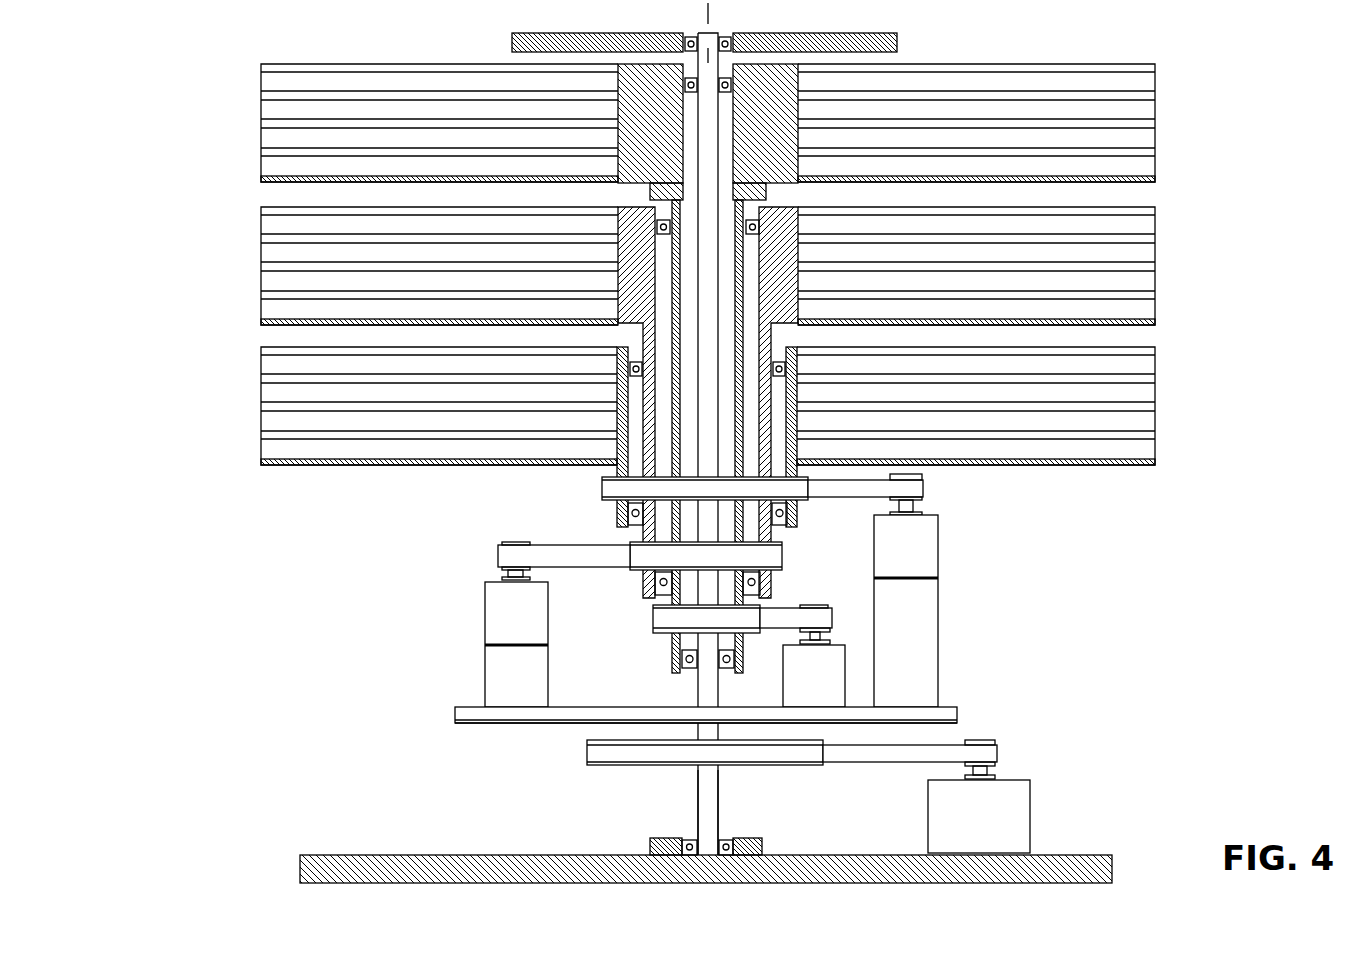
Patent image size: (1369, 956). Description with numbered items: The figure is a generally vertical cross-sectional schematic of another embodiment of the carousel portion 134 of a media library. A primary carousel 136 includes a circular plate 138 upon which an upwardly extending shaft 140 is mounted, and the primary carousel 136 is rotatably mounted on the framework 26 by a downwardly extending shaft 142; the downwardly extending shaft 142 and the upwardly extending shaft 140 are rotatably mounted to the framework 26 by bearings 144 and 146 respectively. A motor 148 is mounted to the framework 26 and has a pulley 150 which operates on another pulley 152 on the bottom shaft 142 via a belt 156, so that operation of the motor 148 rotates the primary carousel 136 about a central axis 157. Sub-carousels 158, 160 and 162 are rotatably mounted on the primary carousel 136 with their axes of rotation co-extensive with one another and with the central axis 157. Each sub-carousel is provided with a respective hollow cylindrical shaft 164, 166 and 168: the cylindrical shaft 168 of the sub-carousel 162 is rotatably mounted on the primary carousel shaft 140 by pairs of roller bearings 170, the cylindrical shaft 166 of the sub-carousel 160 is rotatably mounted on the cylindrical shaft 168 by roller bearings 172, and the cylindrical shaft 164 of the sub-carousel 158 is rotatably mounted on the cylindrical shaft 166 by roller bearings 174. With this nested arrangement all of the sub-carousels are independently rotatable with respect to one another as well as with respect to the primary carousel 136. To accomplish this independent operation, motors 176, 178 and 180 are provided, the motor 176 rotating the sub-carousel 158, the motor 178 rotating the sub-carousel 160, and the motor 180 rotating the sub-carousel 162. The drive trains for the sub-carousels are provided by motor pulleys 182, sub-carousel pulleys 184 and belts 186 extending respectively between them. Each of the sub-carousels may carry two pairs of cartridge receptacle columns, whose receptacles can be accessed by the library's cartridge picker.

The framework 26 is at (512, 43).
The carousel portion 134 is at (1200, 263).
The primary carousel 136 is at (454, 712).
The circular plate 138 is at (500, 725).
The upwardly extending shaft 140 is at (697, 686).
The downwardly extending shaft 142 is at (697, 797).
The bearing 144 is at (725, 840).
The bearing 146 is at (722, 40).
The motor 148 is at (1030, 812).
The pulley 150 is at (995, 741).
The pulley 152 is at (587, 766).
The belt 156 is at (871, 763).
The central axis 157 is at (706, 16).
The sub-carousel 158 is at (259, 416).
The sub-carousel 160 is at (259, 278).
The sub-carousel 162 is at (259, 131).
The hollow cylindrical shaft 164 is at (843, 493).
The hollow cylindrical shaft 166 is at (643, 334).
The hollow cylindrical shaft 168 is at (672, 188).
The roller bearings 170 is at (732, 78).
The roller bearings 172 is at (760, 222).
The roller bearings 174 is at (788, 362).
The motor 176 is at (938, 546).
The motor 178 is at (485, 620).
The motor 180 is at (838, 683).
The motor pulley 182 is at (923, 476).
The sub-carousel pulley 184 is at (600, 480).
The belt 186 is at (615, 622).